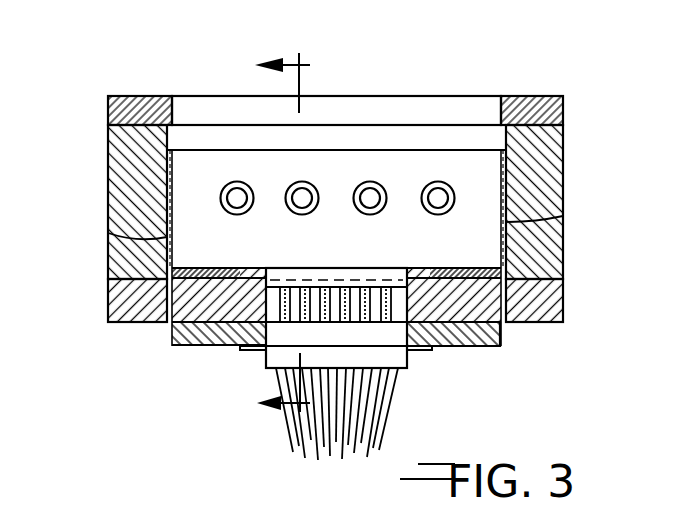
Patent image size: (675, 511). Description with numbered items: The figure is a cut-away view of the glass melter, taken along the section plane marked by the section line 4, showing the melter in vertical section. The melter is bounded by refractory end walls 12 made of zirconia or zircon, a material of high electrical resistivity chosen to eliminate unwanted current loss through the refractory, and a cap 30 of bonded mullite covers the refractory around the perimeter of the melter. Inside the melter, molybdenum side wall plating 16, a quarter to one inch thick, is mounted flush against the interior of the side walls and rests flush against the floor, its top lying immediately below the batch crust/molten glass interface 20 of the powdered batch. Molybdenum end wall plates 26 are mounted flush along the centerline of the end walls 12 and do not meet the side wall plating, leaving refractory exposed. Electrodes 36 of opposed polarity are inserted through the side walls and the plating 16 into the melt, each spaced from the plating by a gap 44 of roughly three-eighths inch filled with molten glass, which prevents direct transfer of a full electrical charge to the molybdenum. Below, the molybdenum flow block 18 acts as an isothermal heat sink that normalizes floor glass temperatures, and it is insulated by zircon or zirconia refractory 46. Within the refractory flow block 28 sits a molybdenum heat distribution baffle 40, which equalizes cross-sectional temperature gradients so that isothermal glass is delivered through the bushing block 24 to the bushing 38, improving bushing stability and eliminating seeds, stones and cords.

The section line 4- 4 is at (272, 234).
The end wall 12 is at (108, 173).
The molybdenum side wall plating 16 is at (313, 252).
The flow block 18 is at (260, 283).
The batch crust/molten glass interface 20 is at (207, 125).
The bushing block 24 is at (455, 348).
The molybdenum end wall plate 26 is at (108, 233).
The refractory flow block 28 is at (480, 318).
The cap 30 is at (108, 115).
The electrode 36 is at (237, 214).
The bushing 38 is at (258, 360).
The heat distribution baffle 40 is at (375, 318).
The gap 44 is at (237, 181).
The zircon or zirconia refractory 46 is at (173, 280).